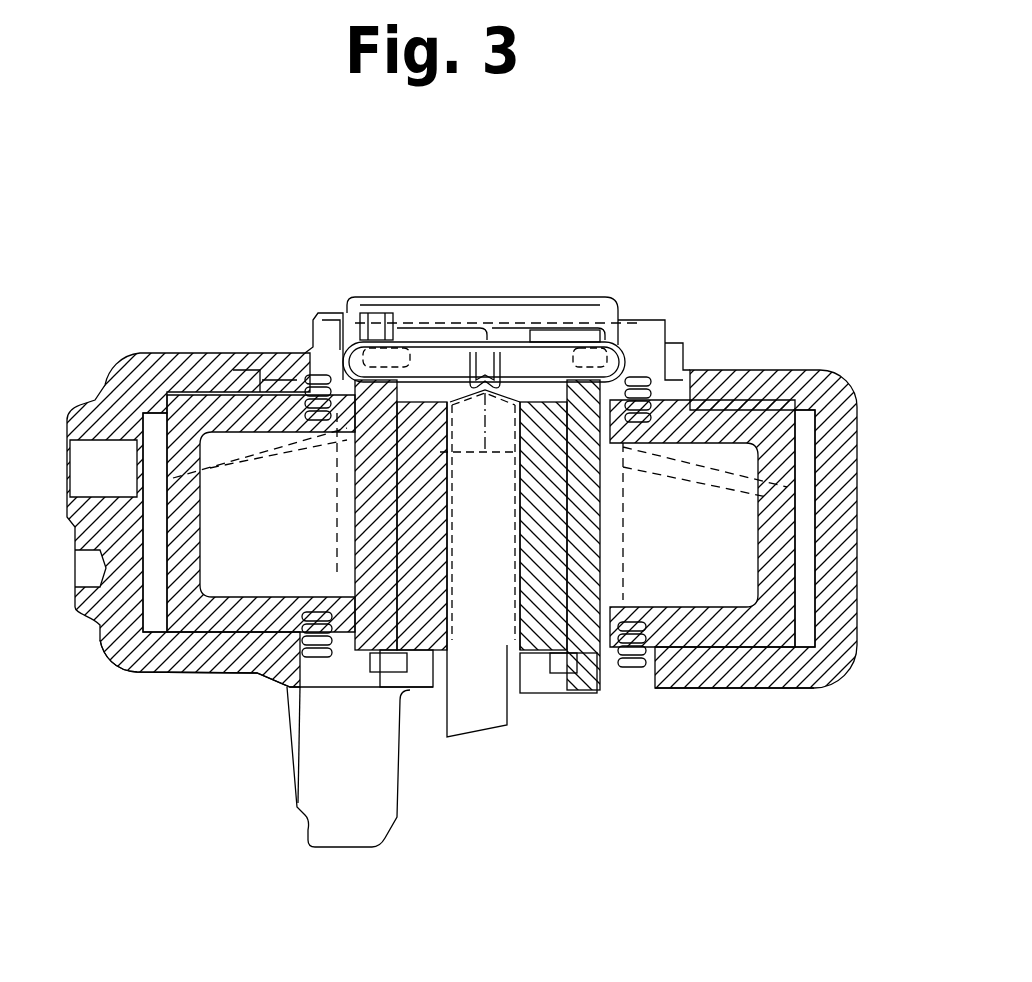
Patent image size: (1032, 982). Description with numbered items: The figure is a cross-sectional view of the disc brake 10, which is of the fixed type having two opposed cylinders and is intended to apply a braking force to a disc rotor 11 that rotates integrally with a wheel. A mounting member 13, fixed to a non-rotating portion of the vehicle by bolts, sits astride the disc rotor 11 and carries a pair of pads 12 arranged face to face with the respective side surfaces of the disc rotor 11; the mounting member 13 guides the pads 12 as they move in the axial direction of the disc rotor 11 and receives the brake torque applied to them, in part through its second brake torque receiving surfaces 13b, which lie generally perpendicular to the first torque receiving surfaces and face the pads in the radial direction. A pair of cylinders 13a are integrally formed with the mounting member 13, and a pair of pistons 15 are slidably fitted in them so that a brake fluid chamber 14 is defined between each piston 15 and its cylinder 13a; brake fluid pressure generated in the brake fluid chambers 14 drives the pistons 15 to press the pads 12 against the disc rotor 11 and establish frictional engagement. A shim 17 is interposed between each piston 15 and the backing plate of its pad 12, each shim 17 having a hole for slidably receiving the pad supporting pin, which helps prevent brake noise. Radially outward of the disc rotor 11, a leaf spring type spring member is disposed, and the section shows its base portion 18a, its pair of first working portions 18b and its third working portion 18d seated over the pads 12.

The disc brake 10 is at (797, 355).
The disc rotor 11 is at (503, 690).
The pad 12 is at (420, 597).
The mounting member 13 is at (340, 767).
The cylinder 13a is at (180, 365).
The second brake torque receiving surface 13b is at (412, 675).
The brake fluid chamber 14 is at (153, 412).
The piston 15 is at (200, 620).
The shim 17 is at (648, 348).
The base portion 18a is at (503, 340).
The first working portion 18b is at (460, 345).
The third working portion 18d is at (520, 302).